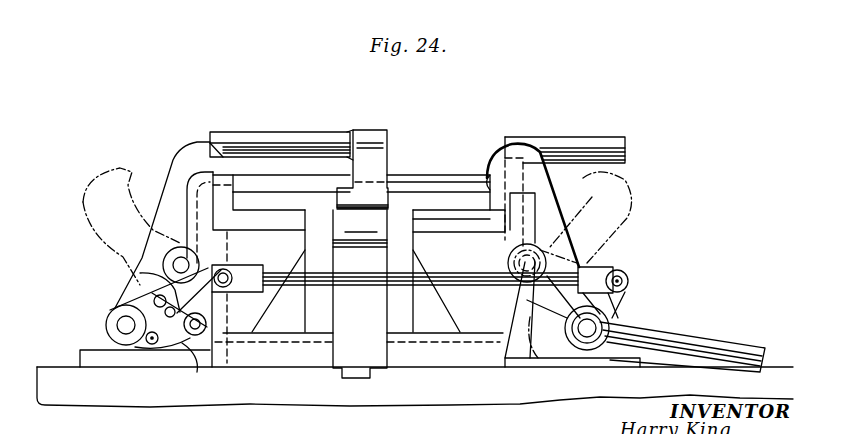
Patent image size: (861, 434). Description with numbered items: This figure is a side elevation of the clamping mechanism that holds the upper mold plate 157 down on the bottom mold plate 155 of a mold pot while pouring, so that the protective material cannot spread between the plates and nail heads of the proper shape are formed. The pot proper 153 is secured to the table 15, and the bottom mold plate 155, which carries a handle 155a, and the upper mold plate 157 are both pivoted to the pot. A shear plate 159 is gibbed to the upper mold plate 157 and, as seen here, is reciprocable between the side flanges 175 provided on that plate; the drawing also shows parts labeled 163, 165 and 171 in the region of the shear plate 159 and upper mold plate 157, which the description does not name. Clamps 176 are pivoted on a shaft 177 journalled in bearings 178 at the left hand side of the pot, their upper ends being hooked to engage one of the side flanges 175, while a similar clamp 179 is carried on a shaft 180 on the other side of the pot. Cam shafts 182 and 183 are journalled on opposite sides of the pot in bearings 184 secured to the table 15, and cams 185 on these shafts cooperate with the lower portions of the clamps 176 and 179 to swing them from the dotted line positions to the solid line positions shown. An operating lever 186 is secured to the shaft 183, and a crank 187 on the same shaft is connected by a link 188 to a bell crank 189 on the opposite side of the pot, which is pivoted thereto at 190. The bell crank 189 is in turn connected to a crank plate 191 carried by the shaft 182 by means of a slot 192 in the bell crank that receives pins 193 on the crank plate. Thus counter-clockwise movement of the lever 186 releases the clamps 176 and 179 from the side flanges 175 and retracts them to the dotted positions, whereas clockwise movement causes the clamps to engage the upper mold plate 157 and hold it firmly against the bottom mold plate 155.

The table 15 is at (133, 397).
The pot proper 153 is at (474, 318).
The bottom mold plate 155 is at (466, 227).
The handle 155a is at (583, 130).
The upper mold plate 157 is at (443, 212).
The shear plate 159 is at (445, 176).
The bar 163 is at (277, 145).
The plate 165 is at (323, 184).
The block 171 is at (365, 197).
The side flanges 175 is at (483, 177).
The clamps 176 is at (183, 163).
The shaft 177 is at (136, 274).
The bearings 178 is at (112, 202).
The clamp 179 is at (548, 192).
The shaft 180 is at (600, 262).
The cam shaft 182 is at (117, 312).
The cam shaft 183 is at (618, 318).
The bearings 184 is at (118, 328).
The cams 185 is at (130, 290).
The operating lever 186 is at (712, 330).
The crank 187 is at (628, 286).
The link 188 is at (370, 281).
The bell crank 189 is at (216, 293).
The pivot 190 is at (206, 336).
The crank plate 191 is at (147, 348).
The slot 192 is at (194, 373).
The pins 193 is at (143, 283).